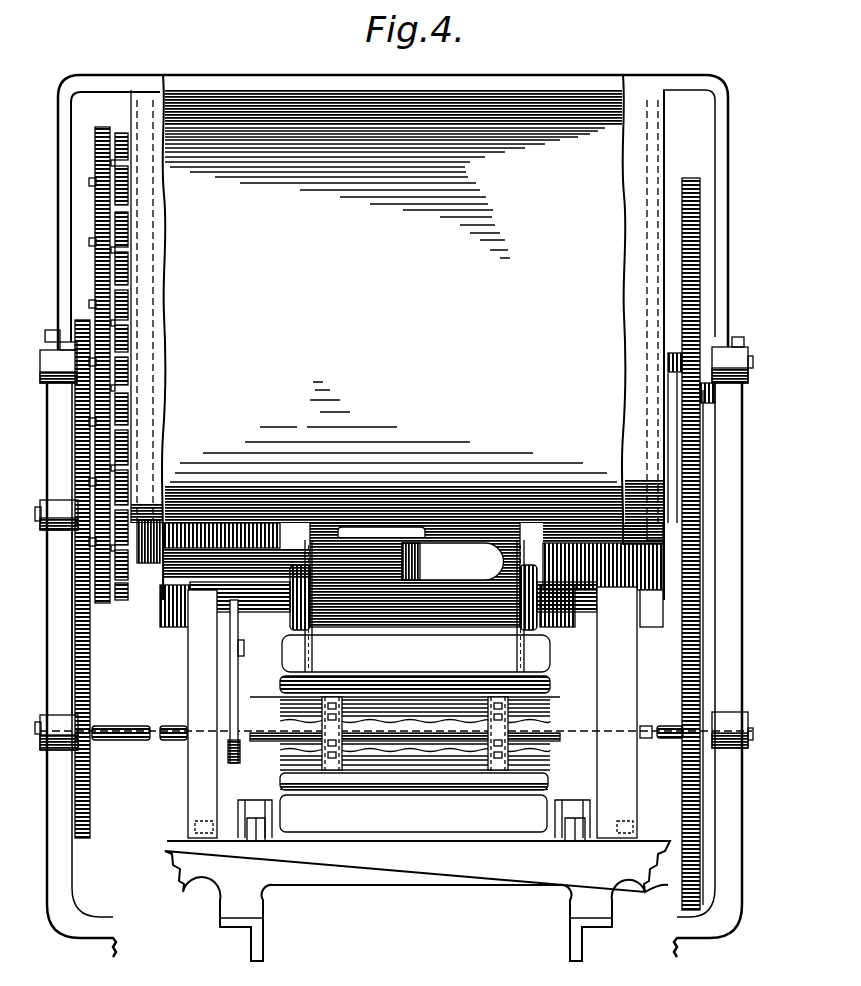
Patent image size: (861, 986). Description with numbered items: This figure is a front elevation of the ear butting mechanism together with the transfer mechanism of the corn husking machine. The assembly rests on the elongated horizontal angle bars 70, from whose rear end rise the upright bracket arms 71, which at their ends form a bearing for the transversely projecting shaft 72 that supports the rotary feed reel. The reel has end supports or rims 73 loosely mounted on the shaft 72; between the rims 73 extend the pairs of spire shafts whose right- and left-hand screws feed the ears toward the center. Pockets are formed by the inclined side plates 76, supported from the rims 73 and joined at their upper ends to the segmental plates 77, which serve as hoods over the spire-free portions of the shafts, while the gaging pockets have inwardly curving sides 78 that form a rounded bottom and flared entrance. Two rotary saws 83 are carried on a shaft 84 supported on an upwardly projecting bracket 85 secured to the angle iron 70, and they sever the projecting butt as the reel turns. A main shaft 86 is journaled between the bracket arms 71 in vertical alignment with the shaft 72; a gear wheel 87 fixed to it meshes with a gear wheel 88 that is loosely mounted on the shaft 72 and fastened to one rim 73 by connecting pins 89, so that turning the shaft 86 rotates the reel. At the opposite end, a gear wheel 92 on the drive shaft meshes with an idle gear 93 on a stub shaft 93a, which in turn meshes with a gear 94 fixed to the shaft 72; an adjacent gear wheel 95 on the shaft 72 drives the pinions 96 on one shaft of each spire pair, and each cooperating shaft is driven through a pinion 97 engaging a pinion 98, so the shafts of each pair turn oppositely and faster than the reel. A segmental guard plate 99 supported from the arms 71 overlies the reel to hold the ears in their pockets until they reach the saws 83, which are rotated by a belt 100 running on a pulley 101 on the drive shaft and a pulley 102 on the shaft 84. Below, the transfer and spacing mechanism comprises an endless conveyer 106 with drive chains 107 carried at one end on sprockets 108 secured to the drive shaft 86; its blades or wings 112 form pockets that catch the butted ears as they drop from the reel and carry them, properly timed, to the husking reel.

The angle bars 70 is at (417, 889).
The upright bracket arms 71 is at (58, 646).
The shaft 72 is at (38, 383).
The end supports or rims 73 is at (152, 193).
The side plates 76 is at (285, 562).
The segmental plates 77 is at (206, 540).
The sides of gaging pockets 78 is at (378, 530).
The rotary saws 83 is at (312, 648).
The shaft 84 is at (165, 628).
The bracket 85 is at (194, 696).
The main shaft 86 is at (125, 728).
The gear wheel 87 is at (684, 647).
The gear wheel 88 is at (700, 437).
The connecting pins 89 is at (677, 473).
The gear wheel 92 is at (91, 672).
The idle gear 93 is at (80, 568).
The stub shaft 93a is at (42, 520).
The gear 94 is at (83, 322).
The gear wheel 95 is at (110, 341).
The pinions 96 is at (100, 283).
The pinion 97 is at (128, 290).
The pinion 98 is at (123, 278).
The guard plate 99 is at (394, 337).
The belt 100 is at (235, 655).
The pulley 101 is at (236, 708).
The pulley 102 is at (240, 637).
The endless conveyer 106 is at (405, 713).
The drive chains 107 is at (325, 706).
The sprockets 108 is at (511, 707).
The blades or wings 112 is at (414, 736).